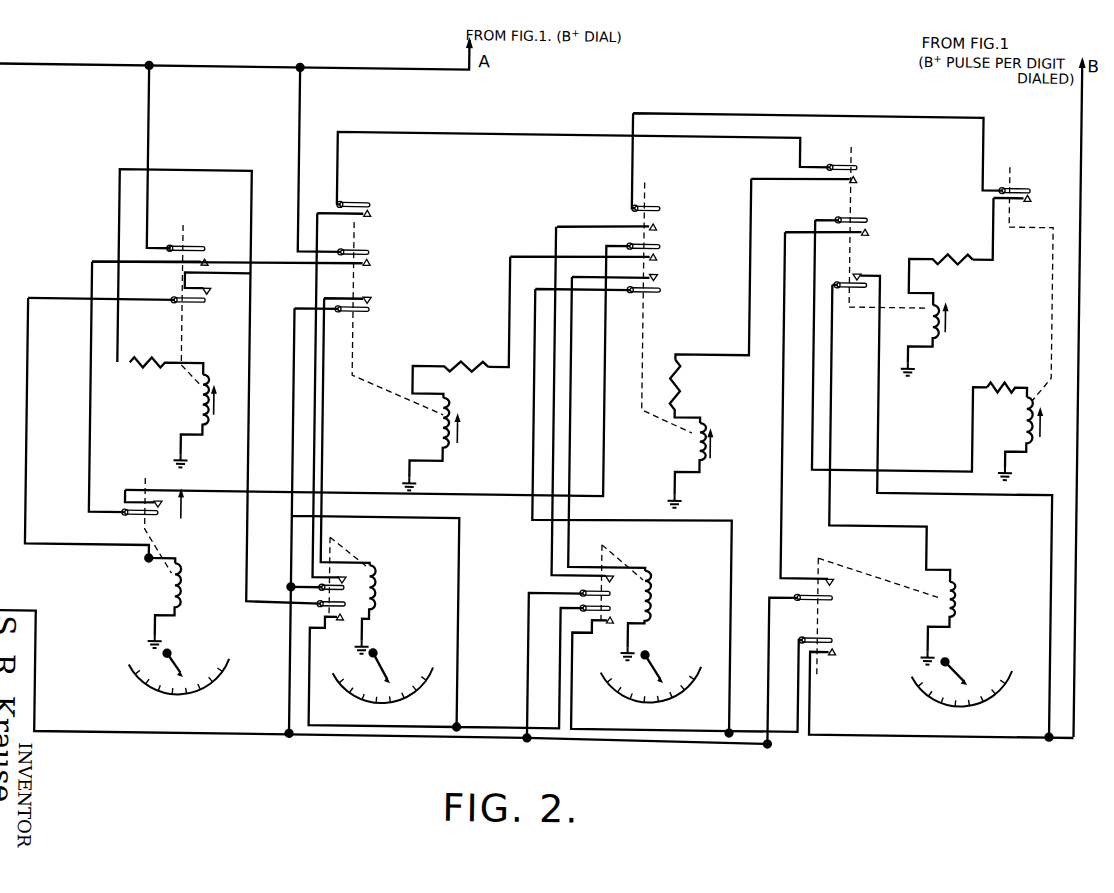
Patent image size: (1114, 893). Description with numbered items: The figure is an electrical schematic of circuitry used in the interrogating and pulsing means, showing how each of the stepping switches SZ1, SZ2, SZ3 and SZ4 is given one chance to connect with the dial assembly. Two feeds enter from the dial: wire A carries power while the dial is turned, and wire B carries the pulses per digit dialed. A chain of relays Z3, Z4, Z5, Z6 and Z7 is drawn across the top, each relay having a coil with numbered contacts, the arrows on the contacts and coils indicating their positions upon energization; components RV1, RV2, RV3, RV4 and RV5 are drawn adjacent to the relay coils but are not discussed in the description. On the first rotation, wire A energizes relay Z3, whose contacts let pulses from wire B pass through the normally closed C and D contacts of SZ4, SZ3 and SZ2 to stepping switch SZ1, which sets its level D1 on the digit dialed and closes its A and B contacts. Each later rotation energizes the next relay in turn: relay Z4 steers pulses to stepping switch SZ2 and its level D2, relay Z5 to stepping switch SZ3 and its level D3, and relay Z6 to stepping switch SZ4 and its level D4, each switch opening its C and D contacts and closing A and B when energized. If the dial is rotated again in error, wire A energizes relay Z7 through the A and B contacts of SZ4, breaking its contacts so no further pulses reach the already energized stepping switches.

The resistor of first relay stage RV1 is at (167, 358).
The resistor of second relay stage RV2 is at (450, 370).
The resistor of third relay stage RV3 is at (693, 392).
The resistor of fifth relay stage RV4 is at (1002, 380).
The resistor of fourth relay stage RV5 is at (941, 271).
The relay Z3 is at (185, 345).
The relay Z4 is at (398, 342).
The relay Z5 is at (669, 345).
The relay Z6 is at (887, 262).
The relay Z7 is at (1023, 324).
The stepping switch SZ1 is at (139, 562).
The stepping switch SZ2 is at (356, 596).
The stepping switch SZ3 is at (624, 602).
The stepping switch SZ4 is at (894, 618).
The level D1 is at (185, 668).
The level D2 is at (387, 675).
The level D3 is at (657, 674).
The level D4 is at (969, 677).